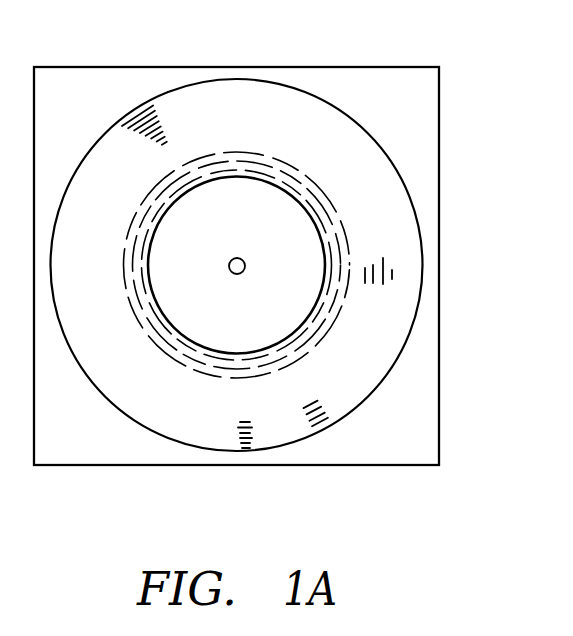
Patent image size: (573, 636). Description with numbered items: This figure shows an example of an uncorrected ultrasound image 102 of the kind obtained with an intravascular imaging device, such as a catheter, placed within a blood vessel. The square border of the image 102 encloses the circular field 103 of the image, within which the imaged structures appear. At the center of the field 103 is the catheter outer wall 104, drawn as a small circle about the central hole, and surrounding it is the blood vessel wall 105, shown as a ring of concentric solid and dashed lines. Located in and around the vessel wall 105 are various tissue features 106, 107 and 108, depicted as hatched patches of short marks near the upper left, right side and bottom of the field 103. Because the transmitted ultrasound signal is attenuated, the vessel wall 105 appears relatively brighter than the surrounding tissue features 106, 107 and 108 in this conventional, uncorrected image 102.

The uncorrected ultrasound image 102 is at (383, 67).
The field 103 is at (377, 388).
The catheter outer wall 104 is at (232, 259).
The blood vessel wall 105 is at (242, 272).
The tissue feature 106 is at (162, 117).
The tissue feature 107 is at (383, 283).
The tissue feature 108 is at (235, 429).